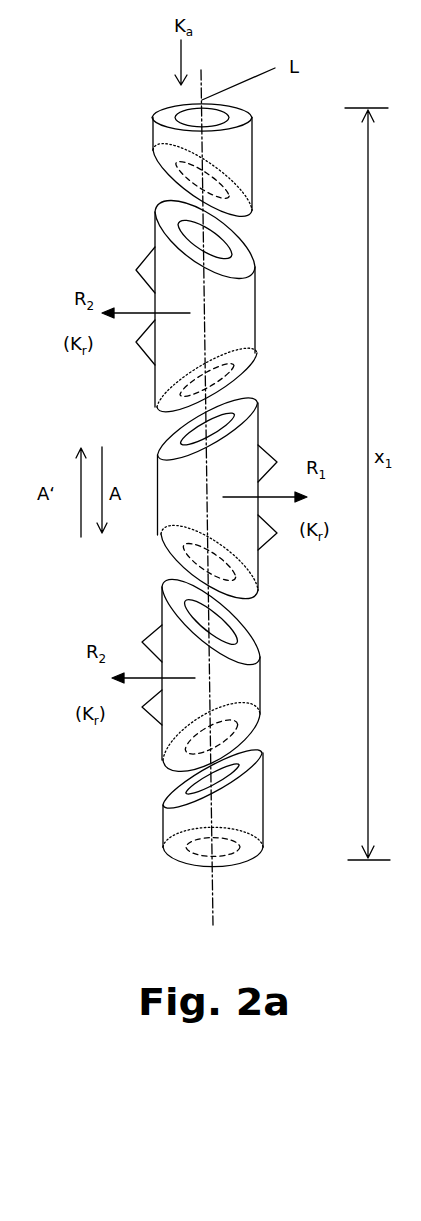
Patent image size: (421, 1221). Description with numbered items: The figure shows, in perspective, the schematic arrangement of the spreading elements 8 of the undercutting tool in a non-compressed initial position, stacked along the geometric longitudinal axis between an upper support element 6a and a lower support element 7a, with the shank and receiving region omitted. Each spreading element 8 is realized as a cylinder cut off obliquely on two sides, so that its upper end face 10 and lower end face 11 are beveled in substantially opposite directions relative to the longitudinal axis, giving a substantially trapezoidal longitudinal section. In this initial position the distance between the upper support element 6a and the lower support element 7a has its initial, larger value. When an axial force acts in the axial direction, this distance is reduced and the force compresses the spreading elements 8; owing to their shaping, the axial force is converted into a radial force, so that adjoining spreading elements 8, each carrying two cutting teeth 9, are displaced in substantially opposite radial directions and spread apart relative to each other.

The upper support element 6a is at (233, 170).
The lower support element 7a is at (242, 812).
The spreading element 8 is at (193, 305).
The cutting tooth 9 is at (136, 270).
The upper end face 10 is at (235, 252).
The lower end face 11 is at (235, 363).